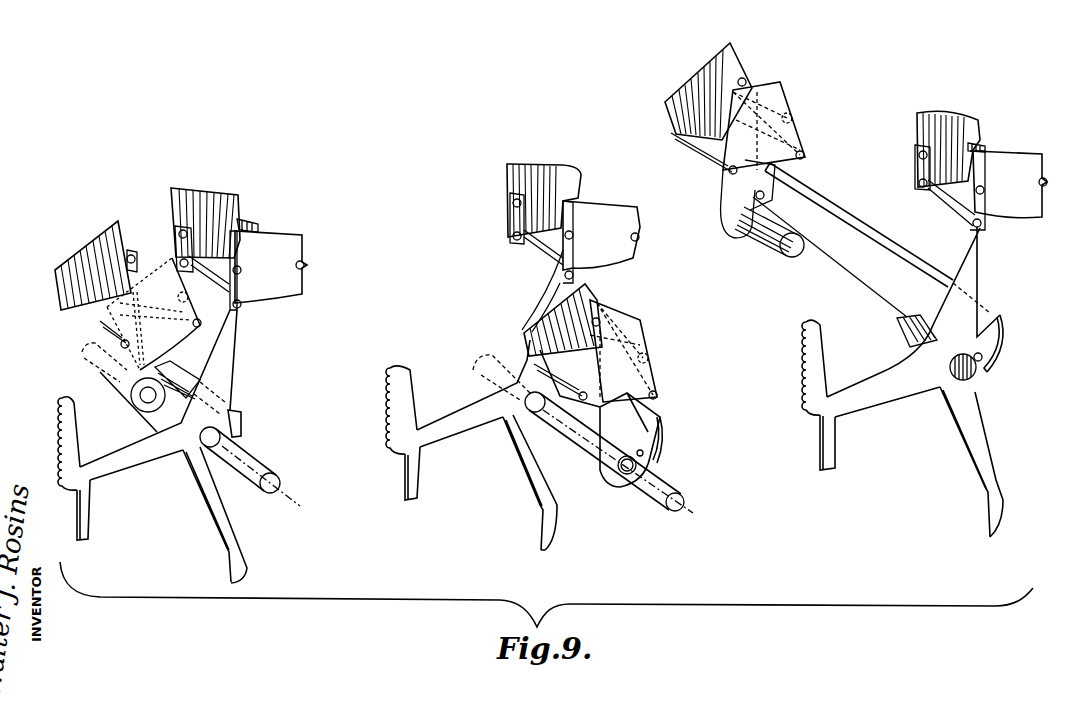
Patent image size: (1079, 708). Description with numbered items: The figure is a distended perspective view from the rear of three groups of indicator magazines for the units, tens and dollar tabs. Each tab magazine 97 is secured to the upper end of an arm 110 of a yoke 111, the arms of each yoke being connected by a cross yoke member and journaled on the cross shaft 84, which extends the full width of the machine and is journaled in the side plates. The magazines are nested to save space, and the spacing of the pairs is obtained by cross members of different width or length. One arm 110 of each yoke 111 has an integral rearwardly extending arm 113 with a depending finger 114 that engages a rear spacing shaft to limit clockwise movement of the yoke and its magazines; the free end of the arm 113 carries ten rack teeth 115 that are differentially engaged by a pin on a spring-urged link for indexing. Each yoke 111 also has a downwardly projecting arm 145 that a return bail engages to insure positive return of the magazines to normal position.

The tab magazine 97 is at (120, 231).
The arm 110 is at (221, 347).
The yoke 111 is at (241, 428).
The rearwardly extending arm 113 is at (152, 450).
The depending finger 114 is at (88, 525).
The rack teeth 115 is at (61, 418).
The downwardly projecting arm 145 is at (226, 536).
The cross shaft 84 is at (280, 488).